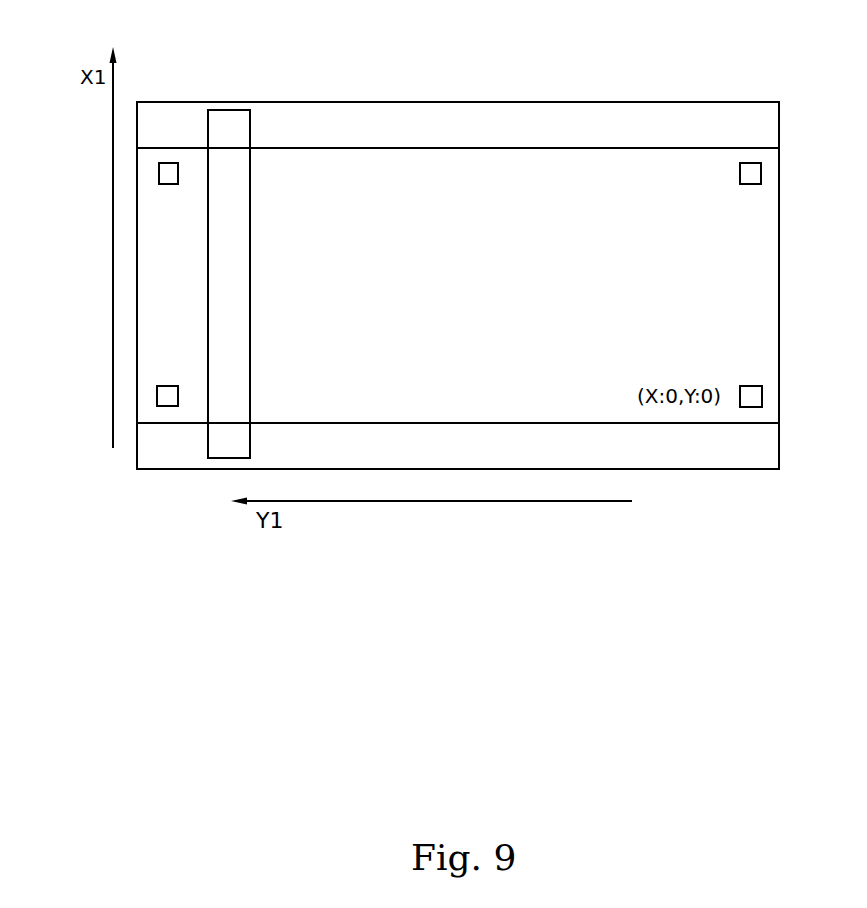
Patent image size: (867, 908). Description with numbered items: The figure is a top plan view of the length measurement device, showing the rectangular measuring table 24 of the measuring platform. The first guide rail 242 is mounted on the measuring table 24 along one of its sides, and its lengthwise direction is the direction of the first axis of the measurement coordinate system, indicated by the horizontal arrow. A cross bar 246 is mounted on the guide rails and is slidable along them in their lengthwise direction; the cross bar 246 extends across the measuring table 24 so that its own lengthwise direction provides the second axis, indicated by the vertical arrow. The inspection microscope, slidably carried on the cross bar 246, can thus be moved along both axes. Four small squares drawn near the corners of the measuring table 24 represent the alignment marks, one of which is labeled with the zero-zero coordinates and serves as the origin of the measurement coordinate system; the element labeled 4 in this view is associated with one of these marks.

The alignment mark 4 is at (167, 172).
The measuring table 24 is at (173, 307).
The first guide rail 242 is at (393, 443).
The cross bar 246 is at (221, 447).